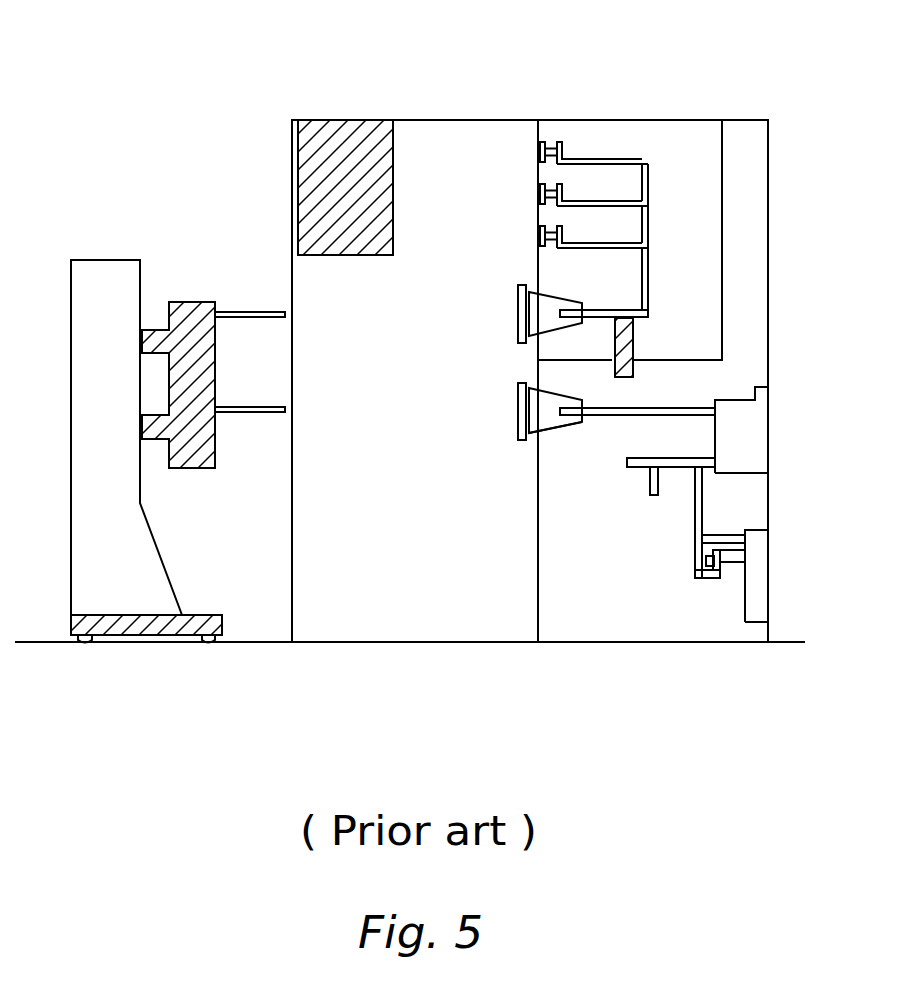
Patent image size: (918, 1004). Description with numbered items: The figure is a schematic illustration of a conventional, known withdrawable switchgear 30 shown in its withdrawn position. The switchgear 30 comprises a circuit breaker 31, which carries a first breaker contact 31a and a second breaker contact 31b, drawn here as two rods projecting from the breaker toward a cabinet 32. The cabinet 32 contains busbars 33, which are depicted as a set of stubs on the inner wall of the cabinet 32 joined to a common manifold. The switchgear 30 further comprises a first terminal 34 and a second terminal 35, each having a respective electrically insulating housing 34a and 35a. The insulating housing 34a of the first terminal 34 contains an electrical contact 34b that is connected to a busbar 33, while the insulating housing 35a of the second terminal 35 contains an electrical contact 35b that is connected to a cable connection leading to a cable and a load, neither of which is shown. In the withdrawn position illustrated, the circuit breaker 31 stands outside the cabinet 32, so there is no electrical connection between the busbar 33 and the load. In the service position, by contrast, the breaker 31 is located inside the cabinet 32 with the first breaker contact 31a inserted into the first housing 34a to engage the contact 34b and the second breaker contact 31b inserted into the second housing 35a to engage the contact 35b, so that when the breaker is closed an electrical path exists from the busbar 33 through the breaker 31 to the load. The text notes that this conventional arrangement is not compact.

The withdrawable switchgear 30 is at (383, 68).
The circuit breaker 31 is at (193, 470).
The first breaker contact 31a is at (248, 307).
The second breaker contact 31b is at (252, 417).
The cabinet 32 is at (486, 128).
The busbars 33 is at (563, 238).
The first terminal 34 is at (568, 326).
The electrically insulating housing 34a is at (538, 291).
The electrical contact 34b is at (580, 306).
The second terminal 35 is at (548, 428).
The electrically insulating housing 35a is at (553, 381).
The electrical contact 35b is at (527, 441).